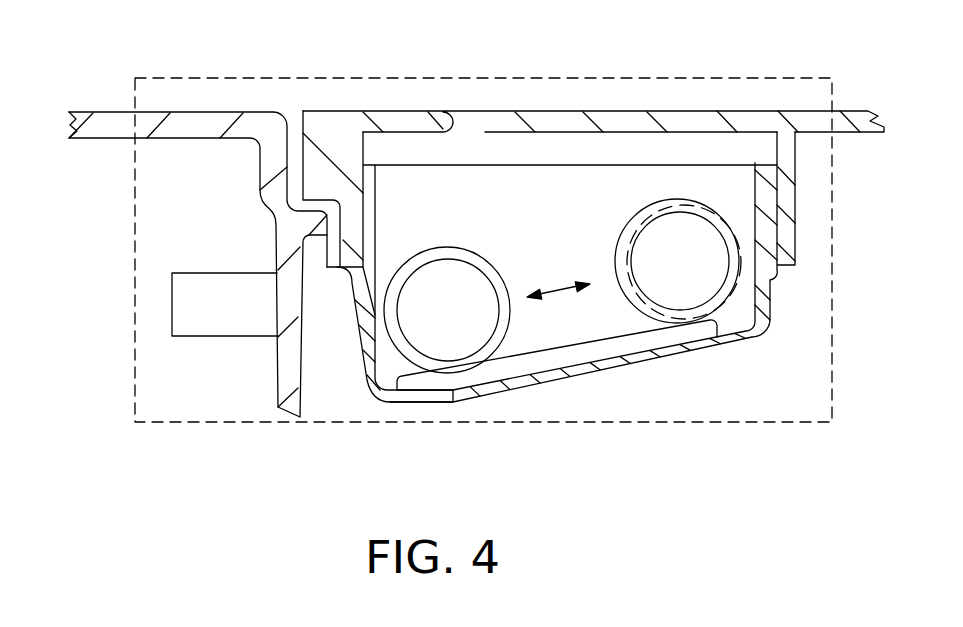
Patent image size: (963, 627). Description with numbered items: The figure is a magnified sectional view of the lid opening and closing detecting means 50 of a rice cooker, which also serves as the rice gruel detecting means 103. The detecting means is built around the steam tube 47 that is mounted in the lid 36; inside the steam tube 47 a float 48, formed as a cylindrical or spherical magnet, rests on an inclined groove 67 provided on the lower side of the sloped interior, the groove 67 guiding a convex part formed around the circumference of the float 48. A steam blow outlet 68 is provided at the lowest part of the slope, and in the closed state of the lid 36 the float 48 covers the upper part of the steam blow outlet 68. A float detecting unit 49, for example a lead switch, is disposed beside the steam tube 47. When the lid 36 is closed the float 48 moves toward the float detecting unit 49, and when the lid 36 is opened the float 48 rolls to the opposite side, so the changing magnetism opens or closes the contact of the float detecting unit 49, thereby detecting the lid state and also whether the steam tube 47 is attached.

The lid 36 is at (194, 120).
The lid opening and closing detecting means 50 is at (483, 212).
The rice gruel detecting means 103 is at (356, 78).
The steam tube 47 is at (630, 173).
The float 48 is at (451, 283).
The float detecting unit 49 is at (226, 317).
The groove 67 is at (603, 350).
The steam blow outlet 68 is at (425, 402).